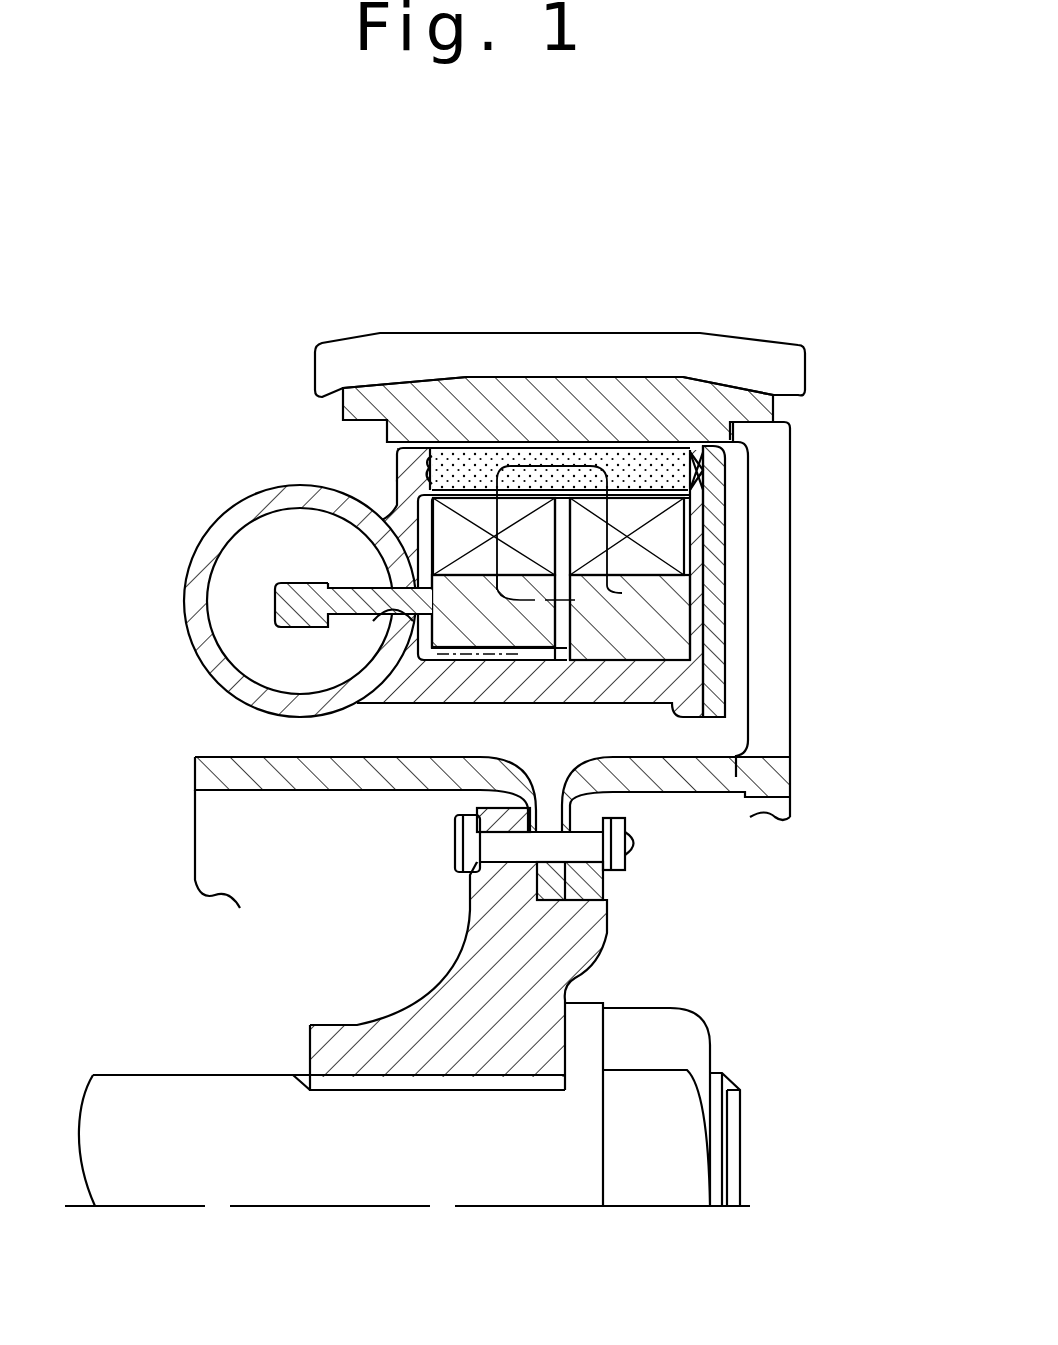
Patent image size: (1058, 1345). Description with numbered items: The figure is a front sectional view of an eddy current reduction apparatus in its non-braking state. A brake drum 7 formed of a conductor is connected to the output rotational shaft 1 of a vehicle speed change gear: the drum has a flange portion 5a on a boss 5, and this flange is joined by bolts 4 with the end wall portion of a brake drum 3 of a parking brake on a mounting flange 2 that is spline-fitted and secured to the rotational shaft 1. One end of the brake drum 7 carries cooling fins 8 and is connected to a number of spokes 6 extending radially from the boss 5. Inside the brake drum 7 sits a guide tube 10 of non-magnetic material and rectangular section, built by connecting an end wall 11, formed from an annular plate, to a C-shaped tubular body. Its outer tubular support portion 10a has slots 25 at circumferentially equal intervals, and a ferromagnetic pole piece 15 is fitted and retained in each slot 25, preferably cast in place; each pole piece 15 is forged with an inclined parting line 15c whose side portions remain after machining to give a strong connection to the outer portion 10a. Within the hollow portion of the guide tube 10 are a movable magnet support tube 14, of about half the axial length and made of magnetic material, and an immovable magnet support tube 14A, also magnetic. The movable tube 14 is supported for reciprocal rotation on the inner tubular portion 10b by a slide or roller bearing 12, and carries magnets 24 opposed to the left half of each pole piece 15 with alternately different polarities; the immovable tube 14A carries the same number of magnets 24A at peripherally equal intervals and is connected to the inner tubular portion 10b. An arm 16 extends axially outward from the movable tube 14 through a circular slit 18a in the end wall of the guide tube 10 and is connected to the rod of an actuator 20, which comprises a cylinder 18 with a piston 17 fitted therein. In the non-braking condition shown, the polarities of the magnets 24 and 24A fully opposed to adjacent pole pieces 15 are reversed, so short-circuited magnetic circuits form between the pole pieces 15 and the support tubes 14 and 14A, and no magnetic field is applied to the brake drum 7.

The output rotational shaft 1 is at (232, 1097).
The mounting flange 2 is at (470, 963).
The brake drum of a parking brake 3 is at (325, 778).
The bolts 4 is at (641, 846).
The boss 5 is at (717, 790).
The flange portion 5a is at (584, 889).
The spokes 6 is at (776, 684).
The brake drum 7 is at (683, 425).
The cooling fins 8 is at (768, 357).
The guide tube 10 is at (505, 517).
The outer tubular support portion 10a is at (418, 460).
The inner tubular portion 10b is at (535, 687).
The end wall 11 is at (718, 606).
The slide or roller bearing 12 is at (453, 661).
The movable magnet support tube 14 is at (488, 626).
The immovable magnet support tube 14A is at (640, 650).
The ferromagnetic pole piece 15 is at (507, 472).
The parting line 15c is at (700, 460).
The arm 16 is at (357, 597).
The piston 17 is at (248, 558).
The cylinder 18 is at (222, 686).
The circular slit 18a is at (375, 617).
The actuator 20 is at (240, 493).
The magnets 24 is at (485, 550).
The magnets 24A is at (669, 522).
The slots 25 is at (433, 470).